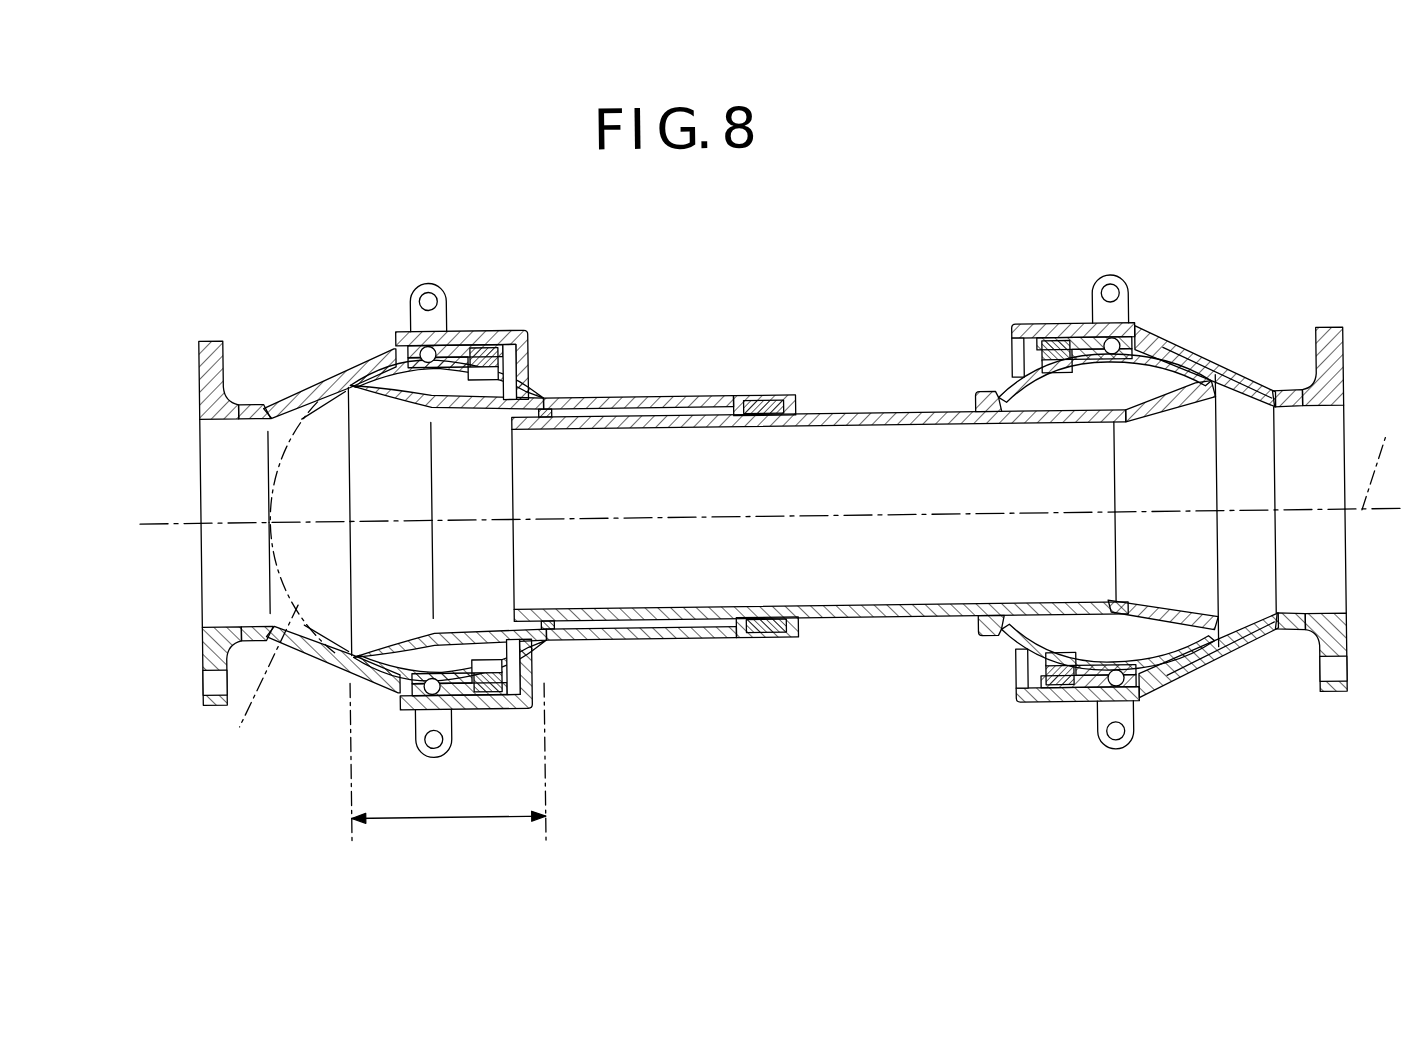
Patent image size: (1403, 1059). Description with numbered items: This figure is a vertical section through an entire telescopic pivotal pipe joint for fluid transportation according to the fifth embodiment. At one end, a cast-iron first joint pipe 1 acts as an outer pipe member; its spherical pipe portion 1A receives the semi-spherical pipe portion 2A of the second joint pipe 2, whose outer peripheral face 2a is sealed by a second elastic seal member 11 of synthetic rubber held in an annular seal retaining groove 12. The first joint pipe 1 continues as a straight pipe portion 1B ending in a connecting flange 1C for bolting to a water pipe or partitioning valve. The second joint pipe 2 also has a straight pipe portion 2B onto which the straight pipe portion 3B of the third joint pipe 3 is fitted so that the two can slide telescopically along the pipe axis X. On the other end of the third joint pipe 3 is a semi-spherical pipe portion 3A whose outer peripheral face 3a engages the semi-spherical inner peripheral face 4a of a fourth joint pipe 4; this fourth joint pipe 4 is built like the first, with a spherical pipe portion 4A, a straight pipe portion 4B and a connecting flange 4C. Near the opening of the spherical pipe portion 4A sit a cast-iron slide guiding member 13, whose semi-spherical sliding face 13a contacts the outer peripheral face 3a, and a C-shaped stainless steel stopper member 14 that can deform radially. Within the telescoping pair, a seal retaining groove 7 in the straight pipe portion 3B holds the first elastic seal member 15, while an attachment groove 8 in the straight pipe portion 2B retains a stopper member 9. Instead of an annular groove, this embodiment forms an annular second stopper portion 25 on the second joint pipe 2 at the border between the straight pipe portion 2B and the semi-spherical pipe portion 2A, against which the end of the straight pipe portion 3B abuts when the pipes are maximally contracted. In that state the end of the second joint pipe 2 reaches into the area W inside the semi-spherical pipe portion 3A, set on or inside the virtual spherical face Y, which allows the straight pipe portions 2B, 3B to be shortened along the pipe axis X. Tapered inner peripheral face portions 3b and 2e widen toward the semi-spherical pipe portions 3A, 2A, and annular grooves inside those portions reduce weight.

The first joint pipe 1 is at (1370, 211).
The spherical pipe portion 1A is at (1193, 353).
The straight pipe portion 1B is at (1302, 396).
The connecting flange 1C is at (1335, 333).
The second joint pipe 2 is at (861, 618).
The semi-spherical pipe portion 2A is at (1150, 700).
The outer peripheral face 2a is at (1183, 675).
The straight pipe portion 2B is at (850, 411).
The inner peripheral face portion 2e is at (1147, 618).
The third joint pipe 3 is at (658, 638).
The semi-spherical pipe portion 3A is at (490, 700).
The outer peripheral face 3a is at (383, 343).
The straight pipe portion 3B is at (720, 638).
The inner peripheral face portion 3b is at (413, 400).
The fourth joint pipe 4 is at (355, 221).
The spherical pipe portion 4A is at (367, 340).
The straight pipe portion 4B is at (243, 398).
The connecting flange 4C is at (215, 333).
The semi-spherical inner peripheral face 4a is at (353, 622).
The seal retaining groove 7 is at (773, 413).
The attachment groove 8 is at (550, 630).
The stopper member 9 is at (553, 392).
The second elastic seal member 11 is at (470, 339).
The seal retaining groove 12 is at (437, 346).
The slide guiding member 13 is at (500, 349).
The semi-spherical sliding face 13a is at (482, 376).
The stopper member 14 is at (530, 327).
The first elastic seal member 15 is at (767, 618).
The second stopper portion 25 is at (980, 638).
The area W is at (445, 814).
The pipe axis X is at (1381, 453).
The virtual spherical face Y is at (266, 682).